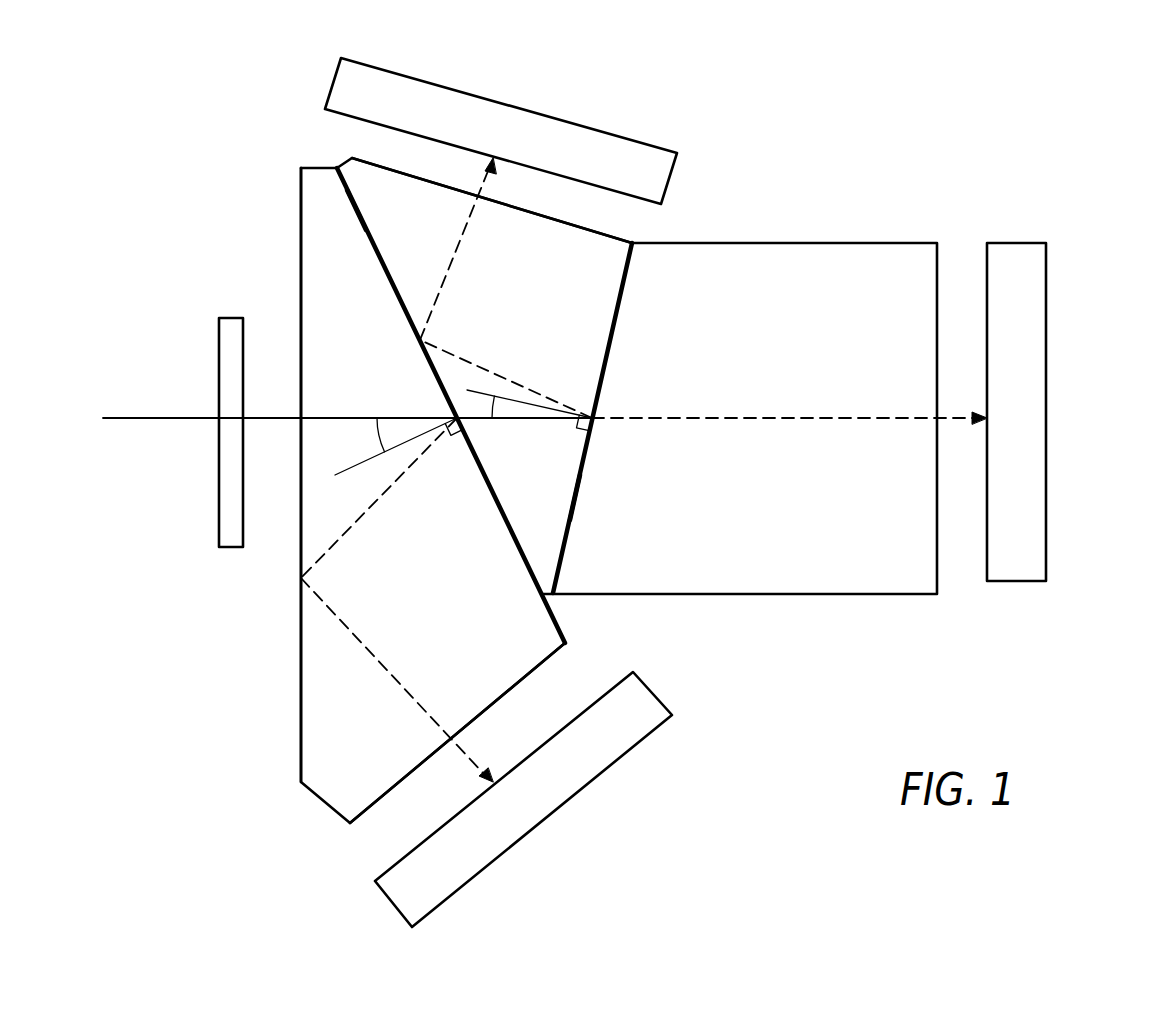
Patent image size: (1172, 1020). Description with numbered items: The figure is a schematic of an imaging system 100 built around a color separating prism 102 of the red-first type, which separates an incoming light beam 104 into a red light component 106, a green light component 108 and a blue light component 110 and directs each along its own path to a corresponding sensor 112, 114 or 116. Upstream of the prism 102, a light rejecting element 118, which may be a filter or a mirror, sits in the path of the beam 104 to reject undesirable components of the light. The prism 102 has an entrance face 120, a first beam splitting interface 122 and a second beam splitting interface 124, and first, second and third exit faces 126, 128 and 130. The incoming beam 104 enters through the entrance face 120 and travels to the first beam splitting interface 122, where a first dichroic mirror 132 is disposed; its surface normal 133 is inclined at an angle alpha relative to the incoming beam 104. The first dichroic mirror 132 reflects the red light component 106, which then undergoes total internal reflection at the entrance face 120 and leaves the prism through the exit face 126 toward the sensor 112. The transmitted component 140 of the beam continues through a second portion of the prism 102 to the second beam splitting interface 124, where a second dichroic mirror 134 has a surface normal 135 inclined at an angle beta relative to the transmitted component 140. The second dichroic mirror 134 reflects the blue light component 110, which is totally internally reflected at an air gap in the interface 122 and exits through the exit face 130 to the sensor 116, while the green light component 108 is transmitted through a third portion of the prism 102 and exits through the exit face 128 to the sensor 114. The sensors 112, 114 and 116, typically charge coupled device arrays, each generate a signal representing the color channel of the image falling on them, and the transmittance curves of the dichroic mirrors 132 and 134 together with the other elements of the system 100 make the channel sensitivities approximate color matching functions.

The imaging system 100 is at (160, 791).
The prism 102 is at (370, 810).
The incoming light beam 104 is at (263, 417).
The red light component 106 is at (476, 763).
The green light component 108 is at (957, 418).
The blue light component 110 is at (485, 172).
The sensor 112 is at (497, 858).
The sensor 114 is at (1047, 362).
The sensor 116 is at (563, 119).
The light rejecting element 118 is at (219, 342).
The entrance face 120 is at (301, 659).
The first beam splitting interface 122 is at (338, 167).
The second beam splitting interface 124 is at (633, 241).
The first exit face 126 is at (557, 650).
The second exit face 128 is at (940, 570).
The third exit face 130 is at (383, 164).
The first dichroic mirror 132 is at (356, 210).
The surface normal 133 is at (358, 464).
The second dichroic mirror 134 is at (575, 502).
The surface normal 135 is at (481, 390).
The transmitted component 140 is at (508, 418).